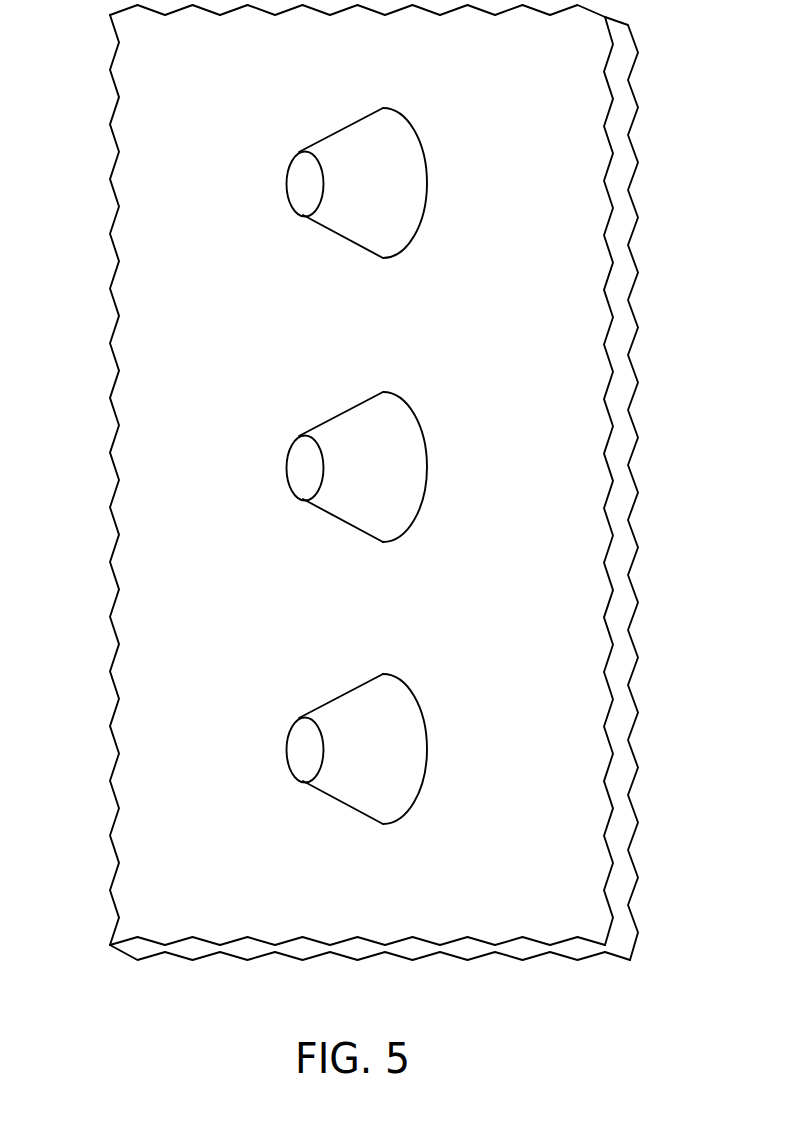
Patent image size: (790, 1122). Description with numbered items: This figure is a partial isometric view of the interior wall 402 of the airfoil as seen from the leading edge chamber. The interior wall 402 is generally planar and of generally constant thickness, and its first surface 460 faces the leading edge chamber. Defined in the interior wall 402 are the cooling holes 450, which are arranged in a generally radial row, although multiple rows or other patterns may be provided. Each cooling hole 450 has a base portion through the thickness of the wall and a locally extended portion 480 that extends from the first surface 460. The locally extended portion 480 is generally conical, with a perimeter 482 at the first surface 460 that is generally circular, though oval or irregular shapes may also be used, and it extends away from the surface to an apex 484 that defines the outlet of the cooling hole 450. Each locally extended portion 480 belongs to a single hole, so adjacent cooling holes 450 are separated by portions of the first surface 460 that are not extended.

The interior wall 402 is at (578, 153).
The first surface 460 is at (145, 387).
The cooling hole 450 is at (357, 466).
The locally extended portion 480 is at (357, 198).
The perimeter 482 is at (428, 186).
The apex 484 is at (288, 188).